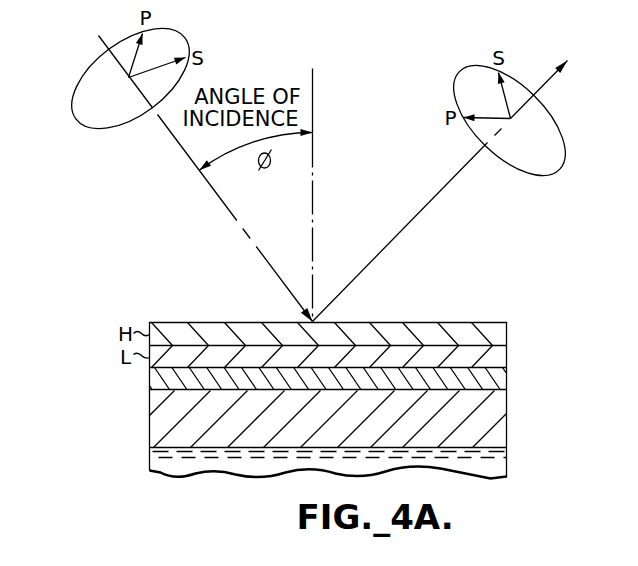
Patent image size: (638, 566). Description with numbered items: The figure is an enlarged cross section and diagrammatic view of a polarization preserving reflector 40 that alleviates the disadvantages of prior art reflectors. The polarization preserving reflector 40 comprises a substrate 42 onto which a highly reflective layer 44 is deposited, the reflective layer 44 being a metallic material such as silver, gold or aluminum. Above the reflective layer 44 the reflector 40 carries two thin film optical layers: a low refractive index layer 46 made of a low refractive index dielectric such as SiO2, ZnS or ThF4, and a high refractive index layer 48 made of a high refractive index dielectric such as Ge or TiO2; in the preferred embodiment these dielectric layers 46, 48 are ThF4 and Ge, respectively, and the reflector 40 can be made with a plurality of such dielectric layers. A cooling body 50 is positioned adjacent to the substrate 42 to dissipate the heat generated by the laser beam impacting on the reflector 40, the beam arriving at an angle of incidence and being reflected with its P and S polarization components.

The polarization preserving reflector 40 is at (87, 279).
The substrate 42 is at (506, 425).
The highly reflective layer 44 is at (506, 382).
The low refractive index layer 46 is at (506, 358).
The high refractive index layer 48 is at (506, 332).
The cooling body 50 is at (506, 463).